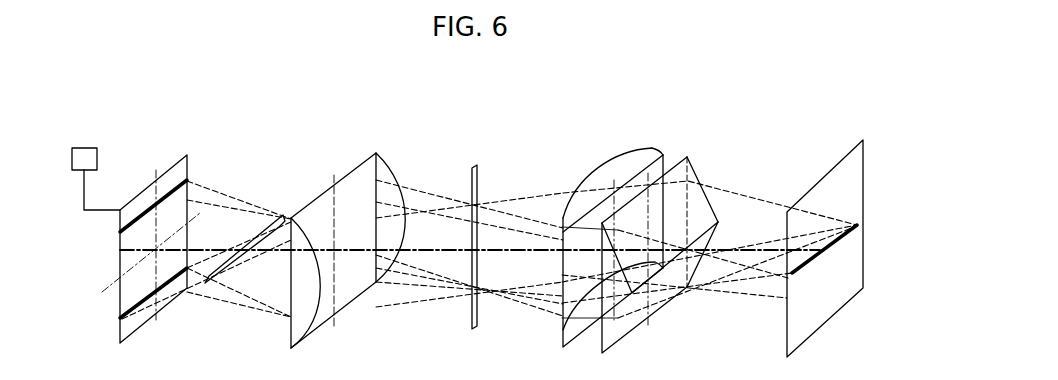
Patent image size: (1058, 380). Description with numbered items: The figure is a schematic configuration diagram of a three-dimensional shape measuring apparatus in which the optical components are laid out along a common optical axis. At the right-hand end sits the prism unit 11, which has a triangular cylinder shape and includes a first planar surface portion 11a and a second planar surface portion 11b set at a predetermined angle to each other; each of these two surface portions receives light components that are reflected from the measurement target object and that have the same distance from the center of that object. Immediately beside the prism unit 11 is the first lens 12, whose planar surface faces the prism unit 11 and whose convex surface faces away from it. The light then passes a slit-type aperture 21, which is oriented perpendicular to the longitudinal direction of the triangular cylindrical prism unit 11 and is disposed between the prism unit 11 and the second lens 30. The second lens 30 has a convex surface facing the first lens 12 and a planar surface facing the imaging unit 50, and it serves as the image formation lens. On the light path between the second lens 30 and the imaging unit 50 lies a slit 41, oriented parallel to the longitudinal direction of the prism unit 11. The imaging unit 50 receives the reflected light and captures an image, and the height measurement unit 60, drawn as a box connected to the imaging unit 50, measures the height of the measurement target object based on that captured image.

The height measurement unit 60 is at (85, 147).
The imaging unit 50 is at (170, 168).
The slit 41 is at (255, 236).
The second lens 30 is at (385, 160).
The slit-type aperture 21 is at (475, 165).
The first lens 12 is at (612, 160).
The prism unit 11 is at (691, 232).
The first planar surface portion 11a is at (680, 207).
The second planar surface portion 11b is at (657, 297).